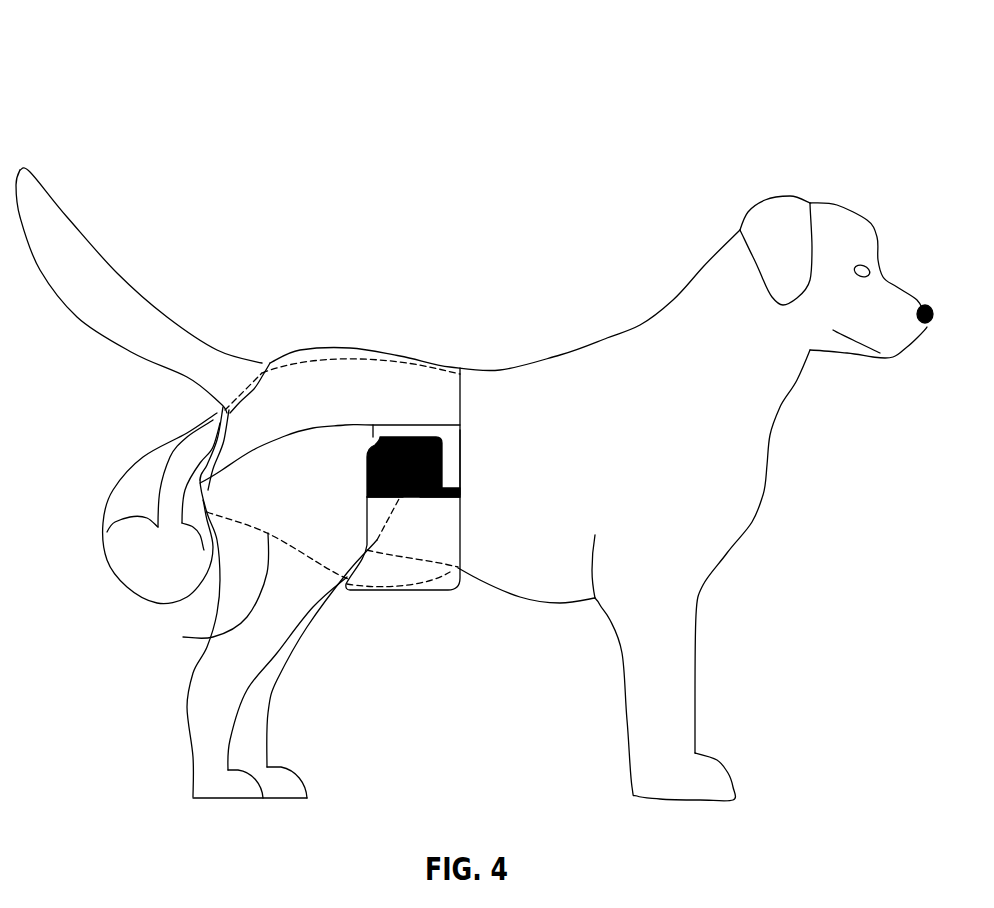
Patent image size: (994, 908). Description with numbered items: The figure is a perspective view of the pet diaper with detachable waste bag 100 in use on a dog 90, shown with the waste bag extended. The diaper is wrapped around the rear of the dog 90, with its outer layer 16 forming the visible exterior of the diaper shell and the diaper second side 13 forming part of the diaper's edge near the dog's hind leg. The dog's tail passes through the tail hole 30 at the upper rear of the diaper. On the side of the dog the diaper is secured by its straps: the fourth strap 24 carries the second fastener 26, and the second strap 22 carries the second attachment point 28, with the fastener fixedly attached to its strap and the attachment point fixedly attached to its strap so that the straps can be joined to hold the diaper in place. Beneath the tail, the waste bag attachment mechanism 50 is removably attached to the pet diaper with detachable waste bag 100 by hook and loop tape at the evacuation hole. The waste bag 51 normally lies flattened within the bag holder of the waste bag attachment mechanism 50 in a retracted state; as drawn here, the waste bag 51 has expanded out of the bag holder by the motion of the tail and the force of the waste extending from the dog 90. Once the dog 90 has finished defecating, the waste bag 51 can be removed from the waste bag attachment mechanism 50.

The pet diaper with detachable waste bag 100 is at (142, 57).
The dog 90 is at (640, 325).
The outer layer 16 is at (318, 368).
The tail hole 30 is at (263, 363).
The second fastener 26 is at (420, 437).
The fourth strap 24 is at (455, 440).
The second attachment point 28 is at (403, 497).
The second strap 22 is at (437, 497).
The waste bag attachment mechanism 50 is at (217, 413).
The waste bag 51 is at (100, 493).
The diaper second side 13 is at (213, 637).